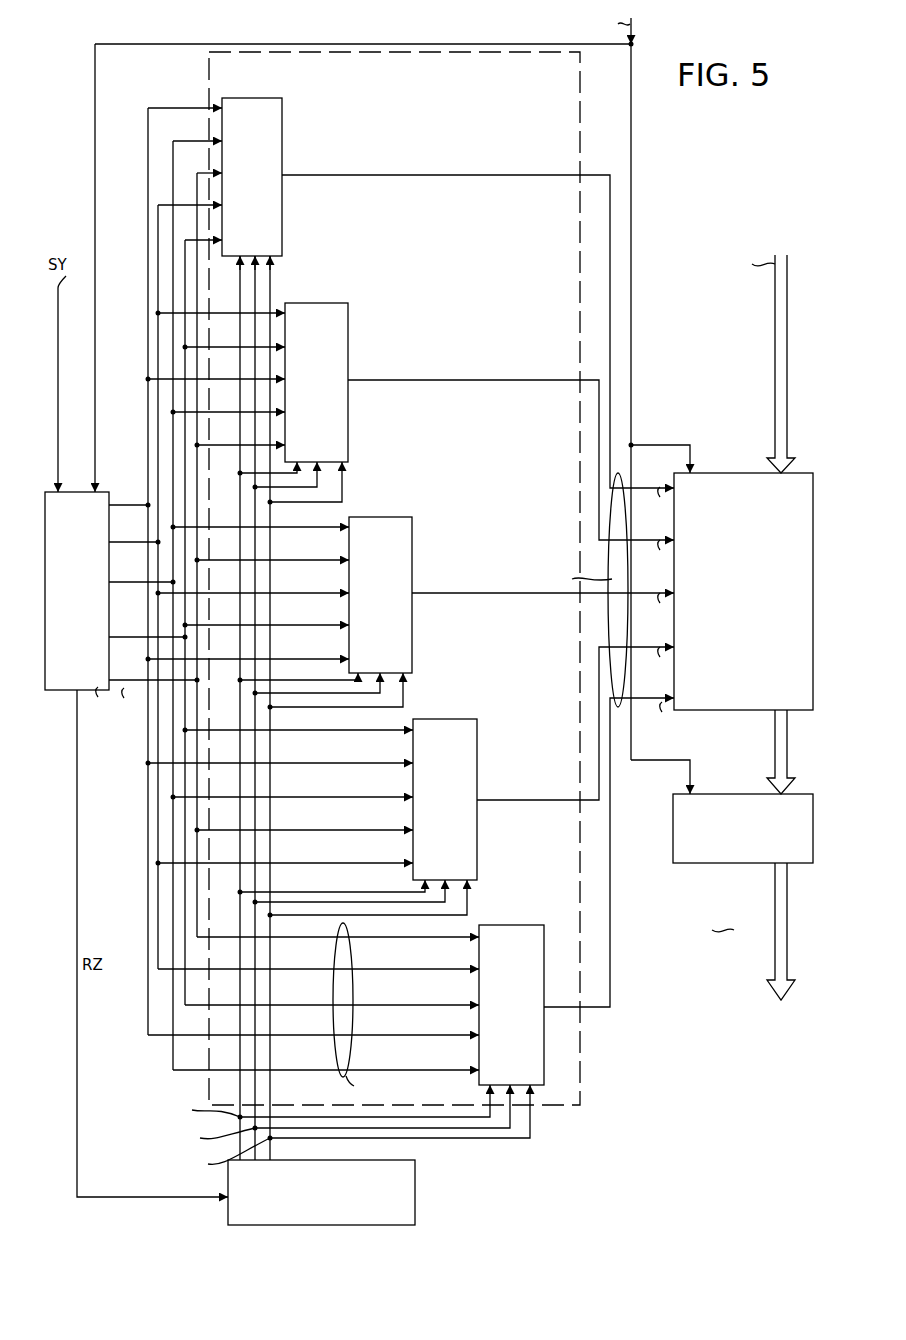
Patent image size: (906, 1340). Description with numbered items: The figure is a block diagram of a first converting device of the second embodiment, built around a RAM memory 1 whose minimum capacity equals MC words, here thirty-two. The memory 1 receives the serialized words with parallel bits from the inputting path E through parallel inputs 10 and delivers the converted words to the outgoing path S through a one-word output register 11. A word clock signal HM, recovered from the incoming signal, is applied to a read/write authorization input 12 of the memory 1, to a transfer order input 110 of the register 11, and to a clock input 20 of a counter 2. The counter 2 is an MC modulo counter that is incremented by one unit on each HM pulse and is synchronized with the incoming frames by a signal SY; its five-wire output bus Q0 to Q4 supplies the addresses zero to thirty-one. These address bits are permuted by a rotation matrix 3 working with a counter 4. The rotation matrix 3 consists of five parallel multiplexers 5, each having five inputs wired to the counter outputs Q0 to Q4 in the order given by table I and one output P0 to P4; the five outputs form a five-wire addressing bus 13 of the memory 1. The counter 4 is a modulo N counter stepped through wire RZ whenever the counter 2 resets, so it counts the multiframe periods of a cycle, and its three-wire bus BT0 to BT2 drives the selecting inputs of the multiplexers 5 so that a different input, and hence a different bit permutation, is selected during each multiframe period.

The RAM memory 1 is at (761, 710).
The address counter 2 is at (62, 690).
The rotation matrix 3 is at (209, 63).
The modulo N counter 4 is at (415, 1180).
The multiplexers 5 is at (282, 110).
The parallel inputs 10 is at (787, 462).
The one-word output register 11 is at (673, 845).
The read/write authorization input 12 is at (692, 472).
The addressing bus 13 is at (616, 700).
The clock input 20 is at (92, 488).
The transfer order input 110 is at (692, 787).